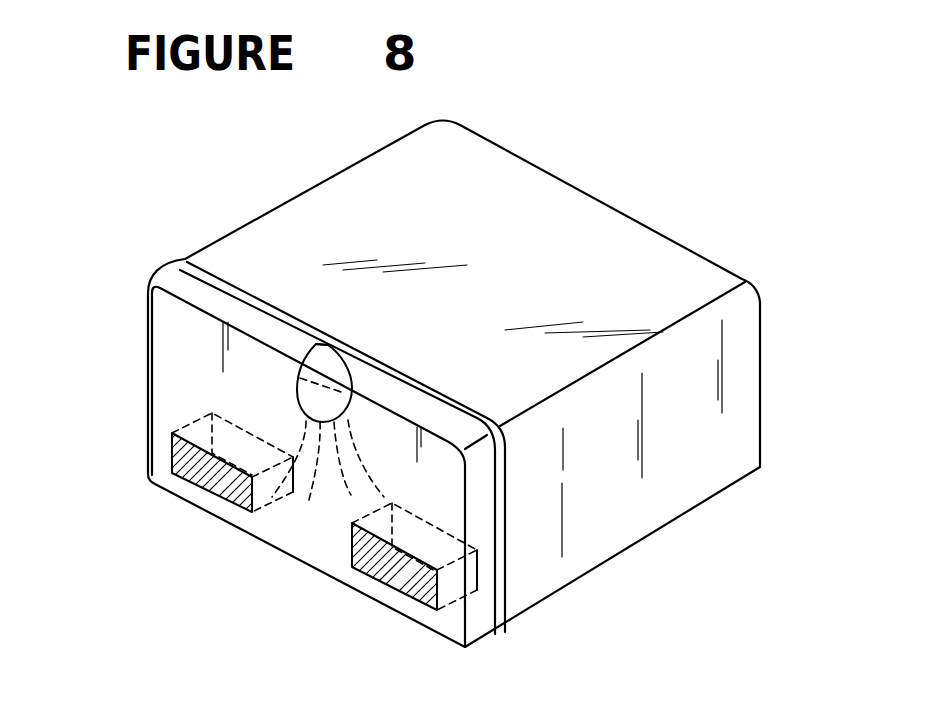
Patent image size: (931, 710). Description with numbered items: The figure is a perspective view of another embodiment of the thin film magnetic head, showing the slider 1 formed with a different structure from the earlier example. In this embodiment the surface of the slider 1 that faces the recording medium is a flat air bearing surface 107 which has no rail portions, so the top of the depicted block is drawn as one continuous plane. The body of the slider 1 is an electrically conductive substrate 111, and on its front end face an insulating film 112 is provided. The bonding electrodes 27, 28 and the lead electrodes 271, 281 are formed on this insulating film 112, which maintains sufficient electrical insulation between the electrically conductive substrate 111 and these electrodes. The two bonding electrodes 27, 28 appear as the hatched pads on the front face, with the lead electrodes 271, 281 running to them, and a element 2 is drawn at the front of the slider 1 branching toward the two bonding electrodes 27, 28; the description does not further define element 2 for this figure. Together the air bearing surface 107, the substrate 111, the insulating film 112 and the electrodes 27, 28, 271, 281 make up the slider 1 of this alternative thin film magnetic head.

The slider 1 is at (473, 398).
The air bearing surface 107 is at (572, 244).
The electrically conductive substrate 111 is at (708, 467).
The insulating film 112 is at (501, 583).
The cable 2 is at (322, 460).
The bonding electrode 27 is at (175, 447).
The lead electrode 271 is at (240, 413).
The bonding electrode 28 is at (368, 585).
The lead electrode 281 is at (348, 497).